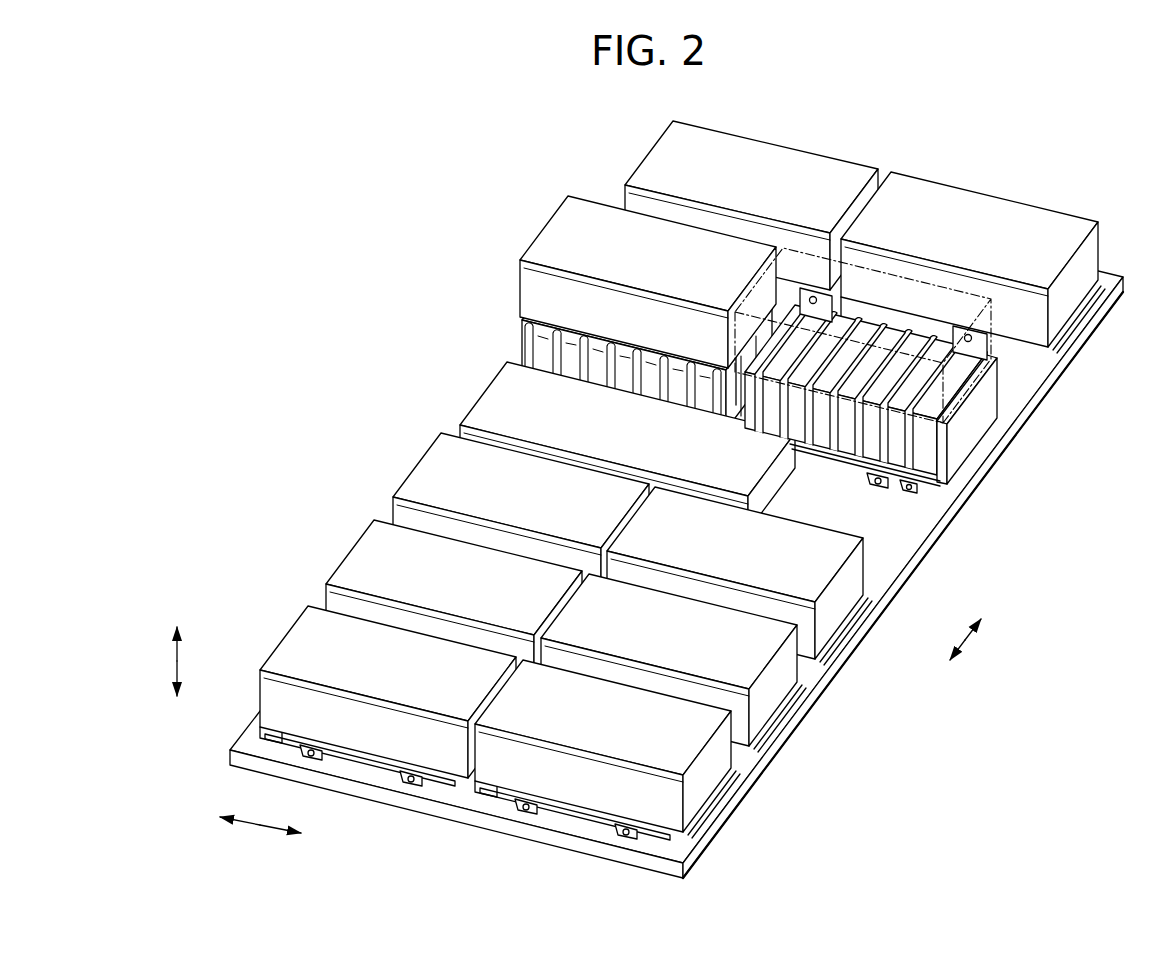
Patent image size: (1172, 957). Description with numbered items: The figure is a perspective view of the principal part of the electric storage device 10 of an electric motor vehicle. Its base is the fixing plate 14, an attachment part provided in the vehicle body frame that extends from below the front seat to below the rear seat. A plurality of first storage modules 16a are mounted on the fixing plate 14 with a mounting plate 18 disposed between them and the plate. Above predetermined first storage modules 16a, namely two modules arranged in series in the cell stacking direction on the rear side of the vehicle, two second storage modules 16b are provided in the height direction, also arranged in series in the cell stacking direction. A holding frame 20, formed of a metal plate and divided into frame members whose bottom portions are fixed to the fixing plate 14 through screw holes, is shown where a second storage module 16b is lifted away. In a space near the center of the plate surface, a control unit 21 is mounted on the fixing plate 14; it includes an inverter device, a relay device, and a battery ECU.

The battery pack 10 is at (653, 499).
The fixing plate 14 is at (917, 570).
The first storage module 16a is at (616, 192).
The second storage module 16b is at (545, 222).
The mounting plate 18 is at (372, 764).
The holding frame 20 is at (932, 465).
The control unit 21 is at (497, 375).